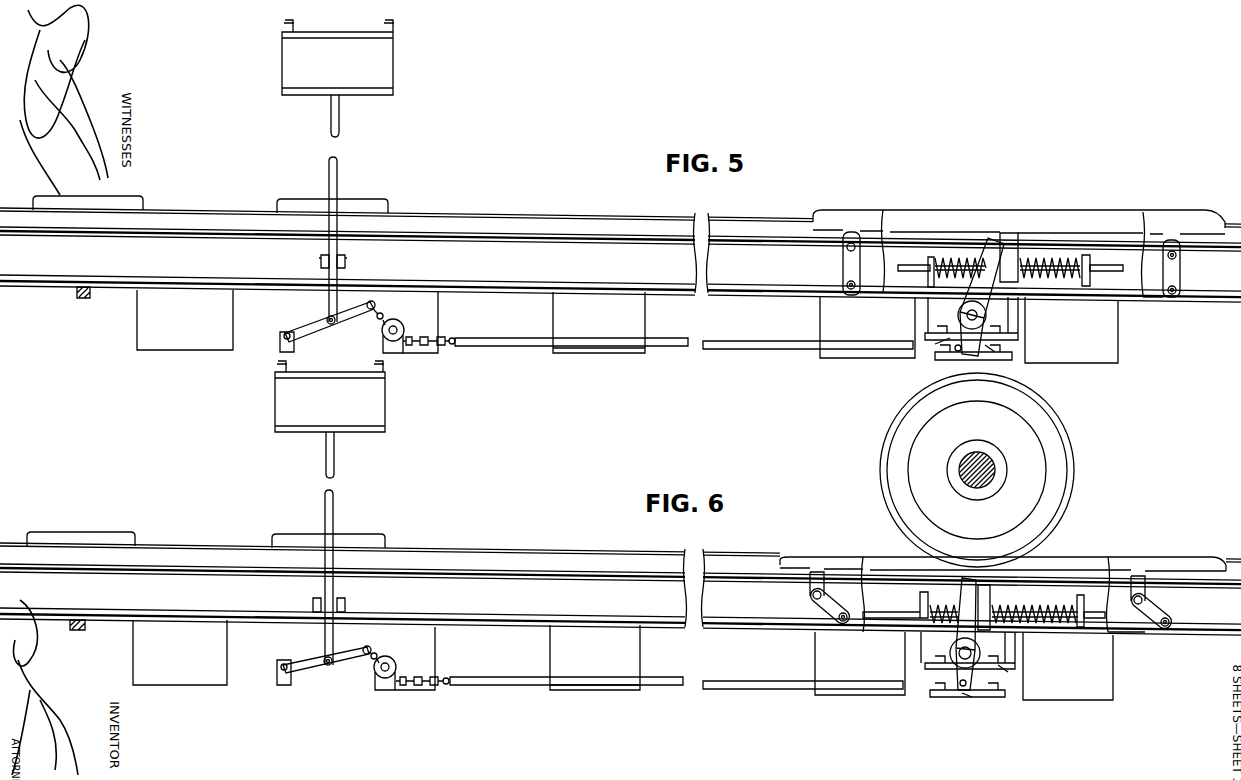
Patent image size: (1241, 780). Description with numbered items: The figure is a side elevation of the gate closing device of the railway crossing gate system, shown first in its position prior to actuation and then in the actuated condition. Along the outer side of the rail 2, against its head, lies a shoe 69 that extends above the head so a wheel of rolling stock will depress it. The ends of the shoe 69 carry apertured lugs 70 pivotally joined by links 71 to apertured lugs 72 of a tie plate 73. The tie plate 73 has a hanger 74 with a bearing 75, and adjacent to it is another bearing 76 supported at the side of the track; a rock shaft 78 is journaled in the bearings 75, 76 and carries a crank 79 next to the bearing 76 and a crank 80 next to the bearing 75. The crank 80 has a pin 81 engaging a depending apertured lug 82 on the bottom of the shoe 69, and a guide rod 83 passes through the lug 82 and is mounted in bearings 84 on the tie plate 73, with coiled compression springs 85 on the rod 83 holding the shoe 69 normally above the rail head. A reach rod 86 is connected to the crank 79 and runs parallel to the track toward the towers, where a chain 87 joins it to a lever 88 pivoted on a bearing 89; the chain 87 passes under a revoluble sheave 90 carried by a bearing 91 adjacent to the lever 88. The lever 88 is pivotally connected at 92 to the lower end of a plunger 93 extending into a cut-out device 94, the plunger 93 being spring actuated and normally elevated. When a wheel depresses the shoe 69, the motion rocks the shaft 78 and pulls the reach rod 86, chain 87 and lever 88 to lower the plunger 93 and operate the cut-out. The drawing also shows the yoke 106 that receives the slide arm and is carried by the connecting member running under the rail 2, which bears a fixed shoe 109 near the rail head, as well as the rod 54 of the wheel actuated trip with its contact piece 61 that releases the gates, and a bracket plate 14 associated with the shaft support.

In FIG. 5, the rail 2 is at (707, 228).
In FIG. 6, the rail 2 is at (697, 567).
In FIG. 5, the bracket plate 14 is at (1012, 328).
In FIG. 5, the rod 54 is at (80, 300).
In FIG. 6, the rod 54 is at (77, 633).
In FIG. 5, the contact piece 61 is at (138, 206).
In FIG. 6, the contact piece 61 is at (75, 540).
In FIG. 5, the shoe 69 is at (947, 212).
In FIG. 6, the shoe 69 is at (831, 557).
In FIG. 5, the apertured lugs 70 is at (1172, 248).
In FIG. 5, the links 71 is at (843, 262).
In FIG. 6, the links 71 is at (810, 600).
In FIG. 5, the apertured lugs 72 is at (848, 290).
In FIG. 6, the apertured lugs 72 is at (843, 620).
In FIG. 5, the tie plate 73 is at (1160, 298).
In FIG. 6, the tie plate 73 is at (1145, 632).
In FIG. 6, the hanger 74 is at (1003, 653).
In FIG. 5, the bearing 75 is at (1002, 338).
In FIG. 6, the bearing 75 is at (1003, 670).
In FIG. 5, the bearing 76 is at (990, 352).
In FIG. 6, the bearing 76 is at (968, 697).
In FIG. 6, the rock shaft 78 is at (948, 692).
In FIG. 5, the crank 79 is at (940, 346).
In FIG. 5, the crank 80 is at (982, 283).
In FIG. 6, the crank 80 is at (957, 630).
In FIG. 5, the pin 81 is at (990, 238).
In FIG. 6, the pin 81 is at (965, 580).
In FIG. 5, the depending apertured lug 82 is at (1010, 243).
In FIG. 6, the depending apertured lug 82 is at (990, 590).
In FIG. 5, the guide rod 83 is at (1108, 265).
In FIG. 6, the guide rod 83 is at (1078, 630).
In FIG. 5, the bearings 84 is at (1087, 287).
In FIG. 6, the bearings 84 is at (1100, 625).
In FIG. 5, the coiled compression springs 85 is at (1060, 260).
In FIG. 6, the coiled compression springs 85 is at (926, 614).
In FIG. 5, the reach rod 86 is at (720, 348).
In FIG. 6, the reach rod 86 is at (716, 688).
In FIG. 5, the chain 87 is at (425, 346).
In FIG. 6, the chain 87 is at (415, 688).
In FIG. 5, the lever 88 is at (360, 300).
In FIG. 6, the lever 88 is at (298, 664).
In FIG. 5, the bearing 89 is at (282, 345).
In FIG. 6, the bearing 89 is at (281, 673).
In FIG. 5, the revoluble sheave 90 is at (404, 330).
In FIG. 6, the revoluble sheave 90 is at (398, 668).
In FIG. 5, the bearing 91 is at (395, 350).
In FIG. 6, the bearing 91 is at (385, 682).
In FIG. 5, the pivotal connection 92 is at (330, 326).
In FIG. 6, the pivotal connection 92 is at (328, 670).
In FIG. 5, the plunger 93 is at (352, 133).
In FIG. 6, the plunger 93 is at (348, 476).
In FIG. 5, the cut-out device 94 is at (338, 57).
In FIG. 6, the cut-out device 94 is at (330, 396).
In FIG. 5, the yoke 106 is at (320, 262).
In FIG. 6, the yoke 106 is at (345, 602).
In FIG. 5, the fixed shoe 109 is at (383, 208).
In FIG. 6, the fixed shoe 109 is at (375, 547).